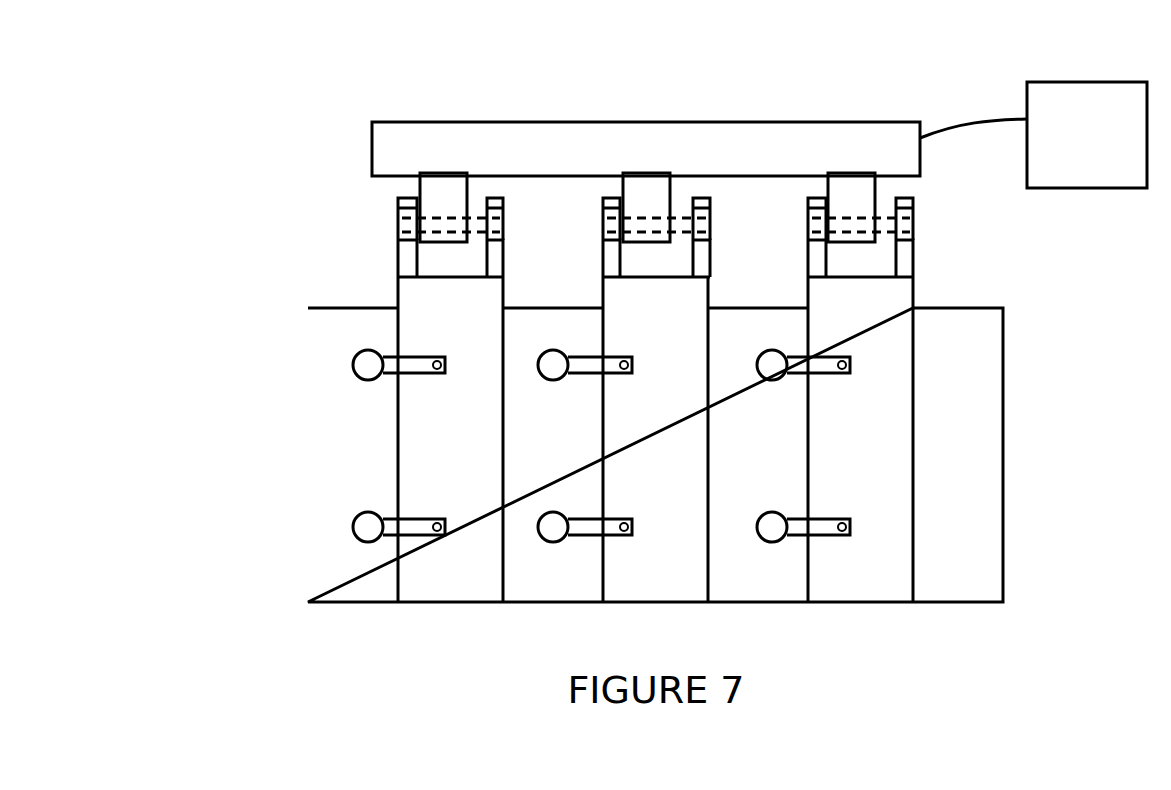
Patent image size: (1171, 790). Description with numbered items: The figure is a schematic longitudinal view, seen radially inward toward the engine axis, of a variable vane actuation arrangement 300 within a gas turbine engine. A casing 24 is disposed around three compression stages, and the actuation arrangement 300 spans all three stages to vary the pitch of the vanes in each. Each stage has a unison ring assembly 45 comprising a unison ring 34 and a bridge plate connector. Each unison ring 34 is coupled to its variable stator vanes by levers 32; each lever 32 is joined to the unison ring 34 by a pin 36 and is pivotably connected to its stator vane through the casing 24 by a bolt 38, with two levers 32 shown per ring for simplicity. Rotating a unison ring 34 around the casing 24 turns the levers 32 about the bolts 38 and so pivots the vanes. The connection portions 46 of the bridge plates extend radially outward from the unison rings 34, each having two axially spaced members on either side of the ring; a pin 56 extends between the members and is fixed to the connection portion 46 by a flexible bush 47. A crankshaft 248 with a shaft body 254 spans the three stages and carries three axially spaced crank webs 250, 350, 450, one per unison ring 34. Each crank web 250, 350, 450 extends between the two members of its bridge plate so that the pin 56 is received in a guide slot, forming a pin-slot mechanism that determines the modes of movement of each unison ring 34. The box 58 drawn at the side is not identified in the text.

The variable vane actuation arrangement 300 is at (292, 56).
The shaft body 254 is at (788, 142).
The controller 58 is at (1107, 158).
The crankshaft 248 is at (350, 167).
The crank web 250 is at (453, 188).
The crank web 350 is at (658, 188).
The crank web 450 is at (863, 188).
The flexible bush 47 is at (402, 210).
The connection portion 46 is at (402, 250).
The unison ring assembly 45 is at (388, 280).
The pin 56 is at (885, 227).
The casing 24 is at (325, 550).
The unison ring 34 is at (454, 577).
The bolt 38 is at (372, 365).
The lever 32 is at (393, 362).
The pin 36 is at (625, 377).